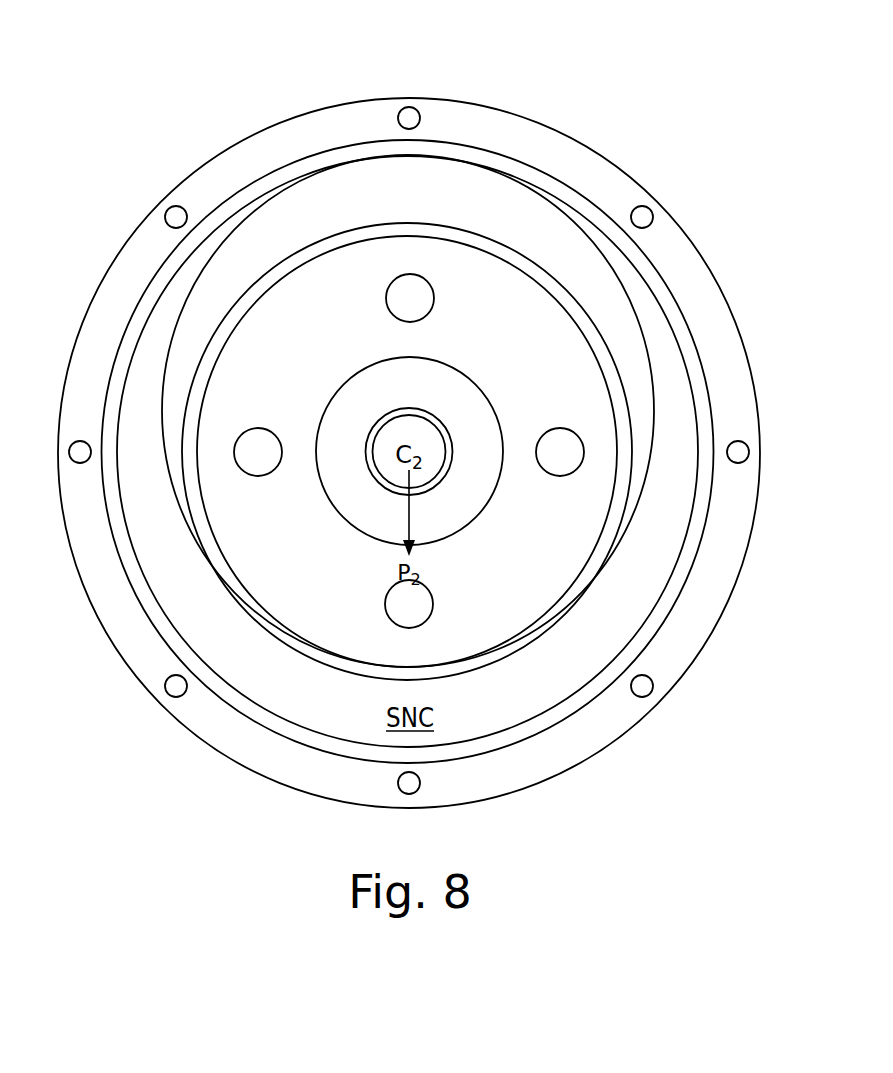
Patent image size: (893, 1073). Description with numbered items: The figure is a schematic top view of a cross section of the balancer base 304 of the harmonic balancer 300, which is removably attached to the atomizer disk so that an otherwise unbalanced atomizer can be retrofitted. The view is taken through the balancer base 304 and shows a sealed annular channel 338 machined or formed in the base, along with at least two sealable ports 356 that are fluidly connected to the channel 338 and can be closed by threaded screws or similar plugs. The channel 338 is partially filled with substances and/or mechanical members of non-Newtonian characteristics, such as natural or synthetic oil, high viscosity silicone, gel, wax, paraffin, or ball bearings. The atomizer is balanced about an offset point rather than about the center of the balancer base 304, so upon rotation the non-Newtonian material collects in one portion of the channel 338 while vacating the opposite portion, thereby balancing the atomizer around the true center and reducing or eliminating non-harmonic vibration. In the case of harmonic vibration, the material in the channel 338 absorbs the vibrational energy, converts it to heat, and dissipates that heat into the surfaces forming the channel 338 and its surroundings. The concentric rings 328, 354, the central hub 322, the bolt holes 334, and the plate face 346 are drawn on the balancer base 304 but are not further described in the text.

The balancer 300 is at (520, 108).
The balancer base 304 is at (610, 156).
The outer flange ring 328 is at (183, 174).
The channel 338 is at (298, 235).
The annular groove 354 is at (241, 311).
The central hub 322 is at (478, 441).
The ports 356 is at (434, 298).
The bolt holes 334 is at (410, 110).
The plate face 346 is at (325, 615).